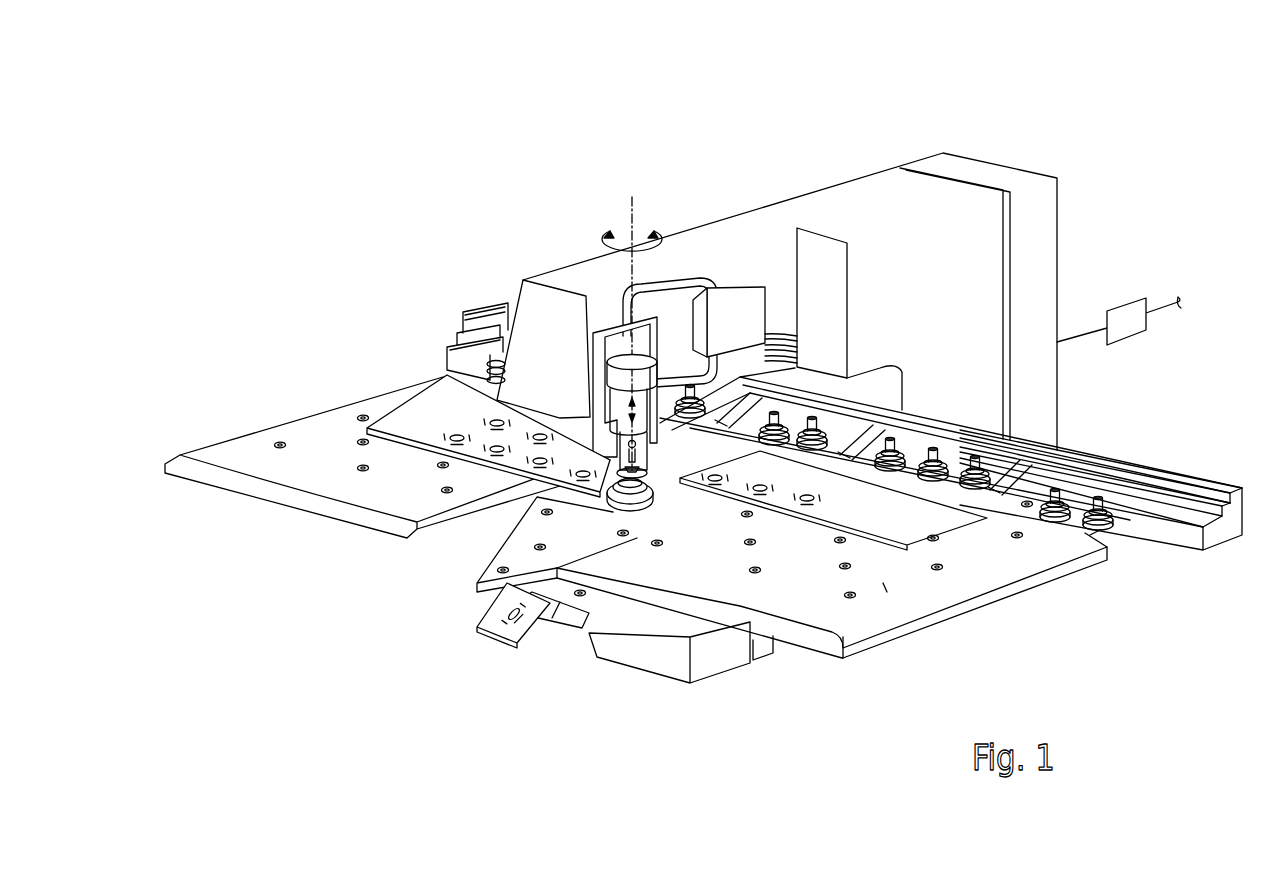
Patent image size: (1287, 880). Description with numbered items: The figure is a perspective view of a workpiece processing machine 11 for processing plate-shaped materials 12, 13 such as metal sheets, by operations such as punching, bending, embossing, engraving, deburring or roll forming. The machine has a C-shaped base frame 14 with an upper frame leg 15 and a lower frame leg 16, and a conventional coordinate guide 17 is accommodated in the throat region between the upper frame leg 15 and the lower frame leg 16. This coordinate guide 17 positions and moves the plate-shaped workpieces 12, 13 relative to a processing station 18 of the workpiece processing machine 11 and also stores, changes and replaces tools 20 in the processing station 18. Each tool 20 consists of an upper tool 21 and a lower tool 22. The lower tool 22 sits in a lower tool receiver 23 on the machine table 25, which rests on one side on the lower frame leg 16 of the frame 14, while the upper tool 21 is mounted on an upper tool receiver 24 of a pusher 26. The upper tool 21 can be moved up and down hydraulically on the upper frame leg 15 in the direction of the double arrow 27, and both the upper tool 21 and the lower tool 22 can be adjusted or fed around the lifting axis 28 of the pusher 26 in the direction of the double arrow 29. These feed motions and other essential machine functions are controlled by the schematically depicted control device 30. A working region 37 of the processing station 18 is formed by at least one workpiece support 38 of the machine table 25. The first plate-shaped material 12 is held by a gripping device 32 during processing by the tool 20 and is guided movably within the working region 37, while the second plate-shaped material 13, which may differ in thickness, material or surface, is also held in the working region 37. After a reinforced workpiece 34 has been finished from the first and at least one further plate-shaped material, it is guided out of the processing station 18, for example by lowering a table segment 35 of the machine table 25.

The workpiece processing machine 11 is at (854, 274).
The first plate-shaped material 12 is at (913, 529).
The second plate-shaped material 13 is at (397, 428).
The C-shaped base frame 14 is at (790, 274).
The upper frame leg 15 is at (817, 207).
The lower frame leg 16 is at (772, 648).
The coordinate guide 17 is at (1183, 472).
The processing station 18 is at (540, 497).
The tool 20 is at (1122, 478).
The upper tool 21 is at (640, 452).
The lower tool 22 is at (653, 515).
The lower tool receiver 23 is at (650, 520).
The upper tool receiver 24 is at (557, 462).
The machine table 25 is at (833, 613).
The pusher 26 is at (620, 413).
The double arrow 27 is at (628, 405).
The lifting axis 28 is at (625, 203).
The double arrow 29 is at (600, 237).
The control device 30 is at (1138, 335).
The gripping device 32 is at (1027, 446).
The reinforced workpiece 34 is at (477, 628).
The table segment 35 is at (480, 585).
The working region 37 is at (1038, 592).
The workpiece support 38 is at (883, 583).